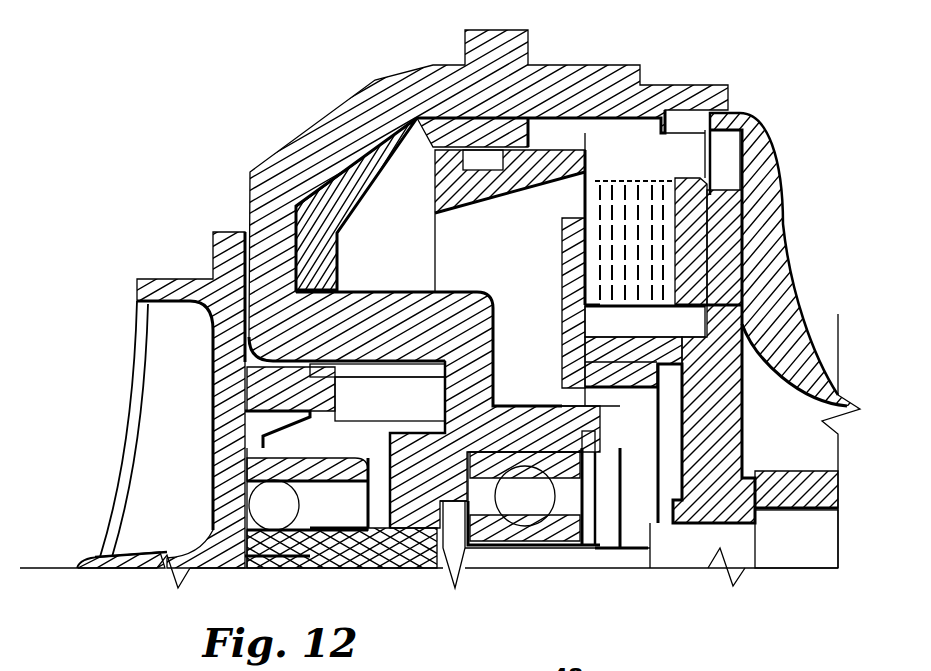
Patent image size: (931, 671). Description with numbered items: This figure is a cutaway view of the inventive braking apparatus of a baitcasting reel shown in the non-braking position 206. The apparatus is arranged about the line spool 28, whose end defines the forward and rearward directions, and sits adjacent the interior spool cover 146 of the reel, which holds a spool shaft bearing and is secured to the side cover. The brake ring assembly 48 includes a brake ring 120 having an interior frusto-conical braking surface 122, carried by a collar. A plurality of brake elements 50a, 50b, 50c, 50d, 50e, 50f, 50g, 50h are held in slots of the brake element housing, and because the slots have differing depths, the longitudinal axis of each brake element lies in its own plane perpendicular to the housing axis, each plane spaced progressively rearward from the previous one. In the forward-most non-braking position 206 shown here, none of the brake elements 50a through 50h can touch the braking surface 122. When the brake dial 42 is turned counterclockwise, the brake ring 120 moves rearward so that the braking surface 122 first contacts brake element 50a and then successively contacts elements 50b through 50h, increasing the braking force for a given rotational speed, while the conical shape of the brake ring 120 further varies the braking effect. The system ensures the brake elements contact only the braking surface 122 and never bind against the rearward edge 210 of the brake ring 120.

The line spool 28 is at (757, 130).
The brake dial 42 is at (138, 347).
The brake ring assembly 48 is at (451, 135).
The brake element 50a is at (598, 203).
The brake element 50b is at (598, 178).
The brake element 50c is at (628, 275).
The brake element 50d is at (635, 290).
The brake element 50e is at (645, 300).
The brake element 50f is at (625, 350).
The brake element 50g is at (660, 178).
The brake element 50h is at (690, 176).
The brake ring 120 is at (535, 155).
The frusto-conical braking surface 122 is at (477, 207).
The interior spool cover 146 is at (620, 78).
The non-braking position 206 is at (570, 177).
The rearward edge 210 is at (590, 145).